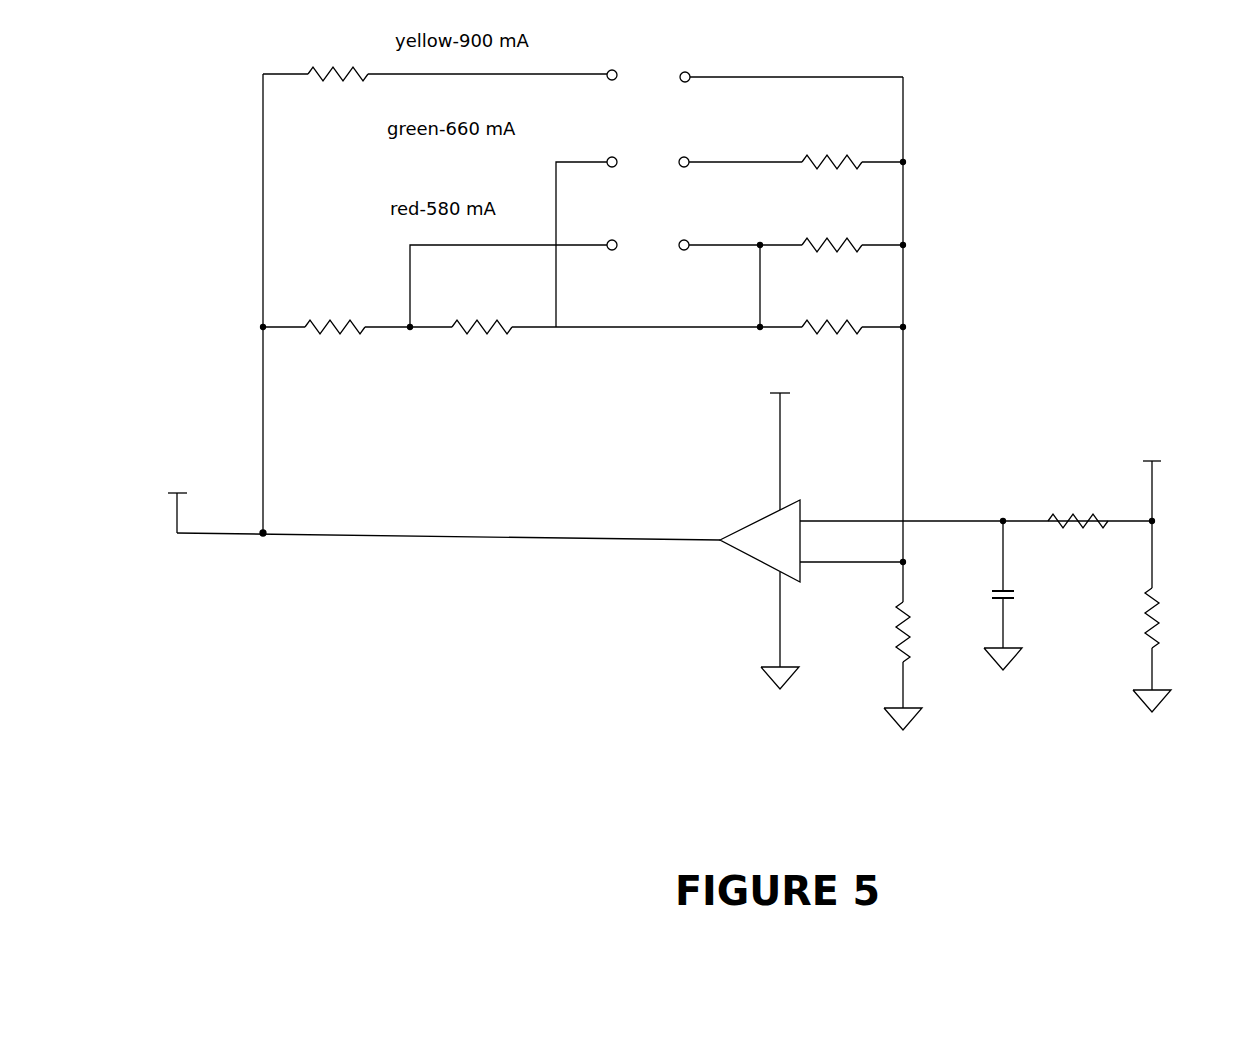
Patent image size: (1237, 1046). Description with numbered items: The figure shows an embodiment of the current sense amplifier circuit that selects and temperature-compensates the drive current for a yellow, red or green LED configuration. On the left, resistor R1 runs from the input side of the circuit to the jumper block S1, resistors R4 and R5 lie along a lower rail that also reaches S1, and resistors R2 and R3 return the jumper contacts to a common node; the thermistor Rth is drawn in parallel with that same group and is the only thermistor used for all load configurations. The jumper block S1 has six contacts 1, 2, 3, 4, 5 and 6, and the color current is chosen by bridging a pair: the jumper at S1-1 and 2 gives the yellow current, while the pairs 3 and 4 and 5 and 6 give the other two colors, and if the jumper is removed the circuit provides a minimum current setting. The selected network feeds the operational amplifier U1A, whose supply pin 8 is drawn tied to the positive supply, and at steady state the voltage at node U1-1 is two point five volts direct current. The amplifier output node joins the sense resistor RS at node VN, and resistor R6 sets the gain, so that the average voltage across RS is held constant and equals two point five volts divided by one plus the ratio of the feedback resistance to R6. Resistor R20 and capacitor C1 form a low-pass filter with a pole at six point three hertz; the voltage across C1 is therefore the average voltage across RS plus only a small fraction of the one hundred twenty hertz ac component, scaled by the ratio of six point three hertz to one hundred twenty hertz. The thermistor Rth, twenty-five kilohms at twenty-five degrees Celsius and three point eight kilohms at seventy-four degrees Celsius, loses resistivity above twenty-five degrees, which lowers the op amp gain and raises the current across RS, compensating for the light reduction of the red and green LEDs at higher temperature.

The resistor R1 42.2K R1 is at (330, 46).
The resistor R2 21.5K R2 is at (827, 132).
The resistor R3 200K R3 is at (828, 216).
The thermistor Rth is at (829, 300).
The resistor R4 43.2K R4 is at (331, 297).
The resistor R5 2.55k R5 is at (478, 297).
The resistor R6 is at (915, 653).
The low-pass filter resistor R20 is at (1074, 491).
The sense resistor RS is at (1178, 621).
The low-pass filter capacitor C1 is at (1030, 601).
The jumper block S1 is at (648, 154).
The jumper position 1 is at (622, 72).
The jumper position 2 is at (678, 71).
The jumper position 3 is at (621, 156).
The jumper position 4 is at (676, 153).
The jumper position 5 is at (623, 237).
The jumper position 6 is at (676, 237).
The op amp supply pin 8 is at (764, 451).
The operational amplifier U1A LM2904 U1A is at (922, 536).
The op amp node U1-1 is at (436, 506).
The supply node VN is at (1145, 479).